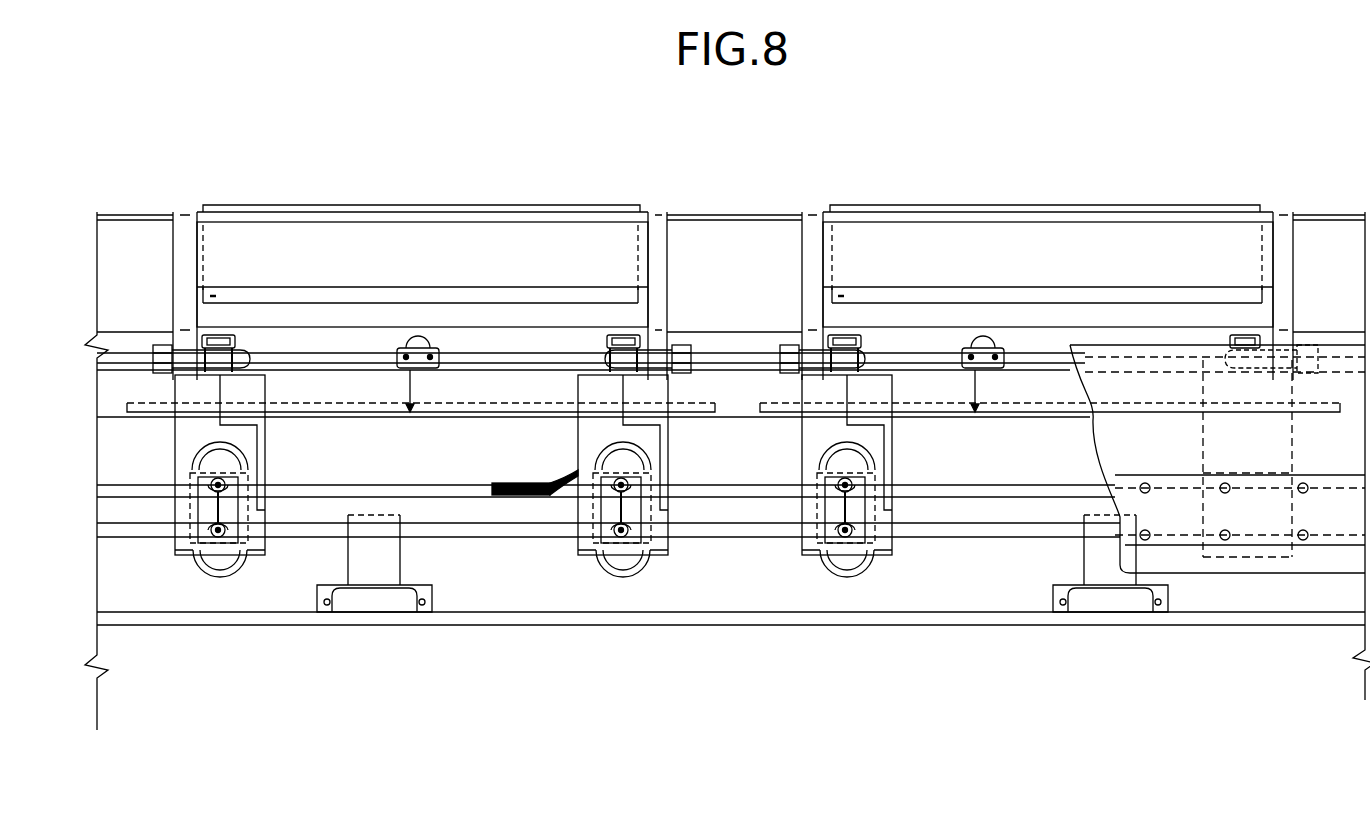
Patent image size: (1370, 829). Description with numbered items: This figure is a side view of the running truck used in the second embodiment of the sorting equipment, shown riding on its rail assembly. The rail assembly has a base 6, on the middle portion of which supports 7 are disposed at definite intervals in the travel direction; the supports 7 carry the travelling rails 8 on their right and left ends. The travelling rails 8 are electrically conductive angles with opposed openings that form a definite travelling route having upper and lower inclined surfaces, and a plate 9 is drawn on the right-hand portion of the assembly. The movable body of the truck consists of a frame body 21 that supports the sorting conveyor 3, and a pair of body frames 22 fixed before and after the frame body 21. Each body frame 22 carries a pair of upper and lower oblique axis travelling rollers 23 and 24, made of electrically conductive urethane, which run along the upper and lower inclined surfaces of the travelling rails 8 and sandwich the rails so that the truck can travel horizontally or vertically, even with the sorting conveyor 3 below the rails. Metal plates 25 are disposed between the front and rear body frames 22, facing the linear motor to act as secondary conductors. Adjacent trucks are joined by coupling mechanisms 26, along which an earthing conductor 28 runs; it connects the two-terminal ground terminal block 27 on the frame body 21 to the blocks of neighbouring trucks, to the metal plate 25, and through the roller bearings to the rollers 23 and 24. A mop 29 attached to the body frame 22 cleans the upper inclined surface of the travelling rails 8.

The sorting conveyor 3 is at (640, 204).
The base 6 is at (716, 618).
The support 7 is at (392, 568).
The travelling rail 8 is at (500, 515).
The cover plate 9 is at (1190, 565).
The frame body 21 is at (665, 345).
The body frame 22 is at (257, 387).
The upper oblique axis travelling roller 23 is at (248, 446).
The lower oblique axis travelling roller 24 is at (232, 568).
The metal plate 25 is at (470, 408).
The coupling mechanism 26 is at (180, 350).
The ground terminal block 27 is at (400, 370).
The earthing conductor 28 is at (493, 348).
The mop 29 is at (520, 482).